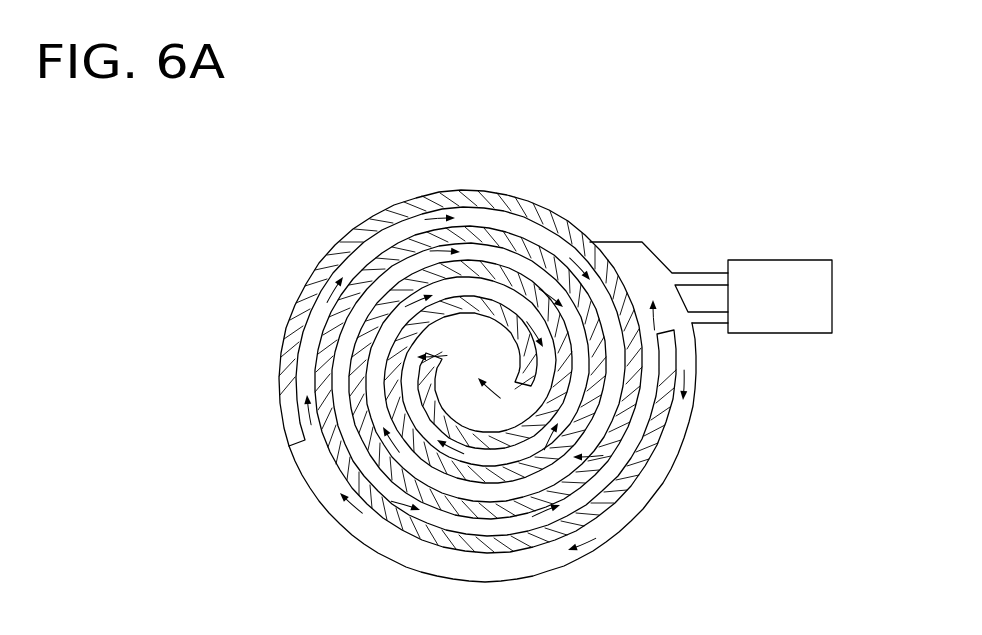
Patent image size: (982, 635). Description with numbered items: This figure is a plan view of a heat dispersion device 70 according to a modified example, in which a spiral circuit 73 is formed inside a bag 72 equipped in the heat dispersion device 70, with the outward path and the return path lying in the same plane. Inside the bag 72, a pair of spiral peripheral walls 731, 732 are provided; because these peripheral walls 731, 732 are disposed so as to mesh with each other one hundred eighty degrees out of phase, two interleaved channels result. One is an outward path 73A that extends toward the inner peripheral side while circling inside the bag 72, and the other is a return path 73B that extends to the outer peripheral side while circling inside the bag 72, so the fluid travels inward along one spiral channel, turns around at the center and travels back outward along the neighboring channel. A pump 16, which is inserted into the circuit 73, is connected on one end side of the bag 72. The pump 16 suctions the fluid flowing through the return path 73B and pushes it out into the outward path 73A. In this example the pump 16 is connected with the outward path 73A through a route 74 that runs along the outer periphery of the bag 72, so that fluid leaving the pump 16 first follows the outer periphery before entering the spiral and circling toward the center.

The heat dispersion device 70 is at (708, 168).
The bag 72 is at (643, 241).
The spiral circuit 73 is at (485, 214).
The outward path 73A is at (300, 420).
The return path 73B is at (652, 465).
The spiral peripheral wall 731 is at (283, 372).
The spiral peripheral wall 732 is at (678, 426).
The route 74 is at (472, 576).
The pump 16 is at (795, 260).